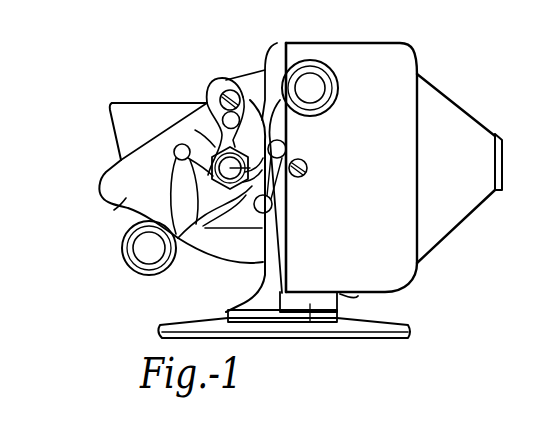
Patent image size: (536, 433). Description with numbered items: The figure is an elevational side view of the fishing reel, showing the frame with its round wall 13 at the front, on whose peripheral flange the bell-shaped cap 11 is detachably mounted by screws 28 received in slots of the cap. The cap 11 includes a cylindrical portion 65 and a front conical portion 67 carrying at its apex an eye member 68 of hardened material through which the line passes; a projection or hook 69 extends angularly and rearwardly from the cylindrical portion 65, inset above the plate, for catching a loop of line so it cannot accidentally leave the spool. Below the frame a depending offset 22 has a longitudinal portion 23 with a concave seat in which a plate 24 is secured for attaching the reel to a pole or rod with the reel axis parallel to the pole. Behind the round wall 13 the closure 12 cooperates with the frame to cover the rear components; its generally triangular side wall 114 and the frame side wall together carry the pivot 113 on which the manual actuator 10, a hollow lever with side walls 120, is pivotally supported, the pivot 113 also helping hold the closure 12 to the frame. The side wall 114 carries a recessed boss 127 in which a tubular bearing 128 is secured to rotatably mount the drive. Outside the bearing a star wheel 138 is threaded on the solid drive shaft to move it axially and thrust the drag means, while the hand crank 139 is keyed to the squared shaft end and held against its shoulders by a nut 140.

The manual actuator 10 is at (125, 92).
The cap 11 is at (443, 77).
The closure 12 is at (100, 182).
The round wall 13 is at (276, 56).
The depending offset 22 is at (248, 298).
The longitudinal portion 23 is at (312, 322).
The plate 24 is at (366, 328).
The screws 28 is at (308, 169).
The cylindrical portion 65 is at (320, 50).
The front conical portion 67 is at (450, 112).
The eye member 68 is at (500, 143).
The projection or hook 69 is at (355, 300).
The pivot 113 is at (226, 91).
The side wall 114 is at (120, 205).
The side walls 120 is at (143, 110).
The recessed boss 127 is at (177, 188).
The tubular bearing 128 is at (230, 198).
The star wheel 138 is at (272, 206).
The hand crank 139 is at (183, 250).
The nut 140 is at (267, 170).